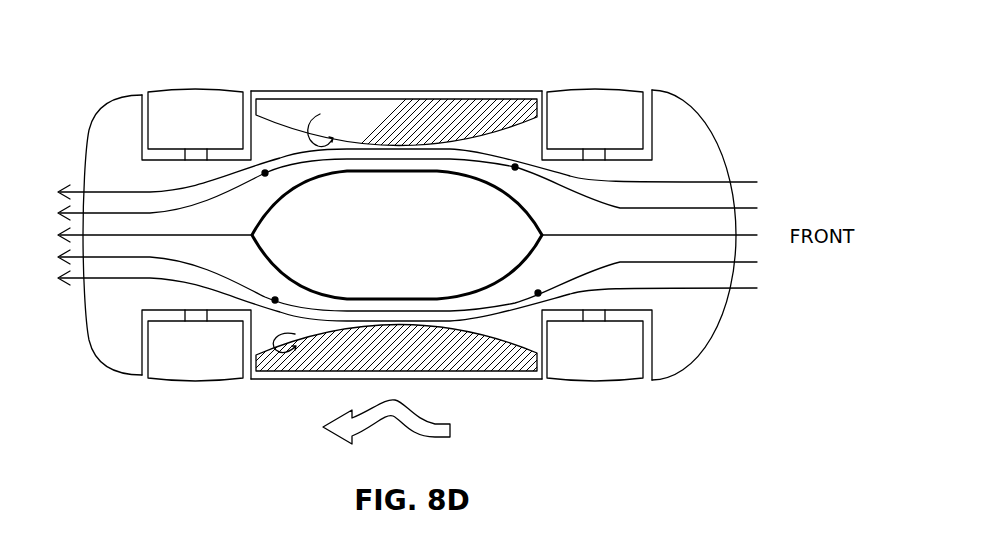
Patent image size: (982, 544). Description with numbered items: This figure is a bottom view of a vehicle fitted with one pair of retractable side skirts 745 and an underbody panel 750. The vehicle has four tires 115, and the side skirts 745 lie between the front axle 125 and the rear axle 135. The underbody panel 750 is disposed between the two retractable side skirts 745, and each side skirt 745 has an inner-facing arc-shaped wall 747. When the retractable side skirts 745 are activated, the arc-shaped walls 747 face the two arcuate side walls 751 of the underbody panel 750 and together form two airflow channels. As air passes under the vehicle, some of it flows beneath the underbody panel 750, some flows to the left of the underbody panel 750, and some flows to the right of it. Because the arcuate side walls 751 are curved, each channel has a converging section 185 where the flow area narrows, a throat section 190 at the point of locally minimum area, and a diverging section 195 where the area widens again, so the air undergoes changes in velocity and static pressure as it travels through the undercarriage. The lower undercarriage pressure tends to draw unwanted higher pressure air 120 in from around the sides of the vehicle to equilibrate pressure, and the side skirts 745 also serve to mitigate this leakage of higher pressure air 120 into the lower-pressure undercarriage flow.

The tires 115 is at (175, 110).
The front axle 125 is at (600, 157).
The rear axle 135 is at (190, 155).
The converging section 185 is at (515, 167).
The throat section 190 is at (383, 157).
The diverging section 195 is at (265, 173).
The higher pressure air 120 is at (406, 422).
The retractable side skirts 745 is at (288, 102).
The arc-shaped walls 747 is at (310, 116).
The underbody panel 750 is at (397, 158).
The arcuate side walls 751 is at (425, 172).